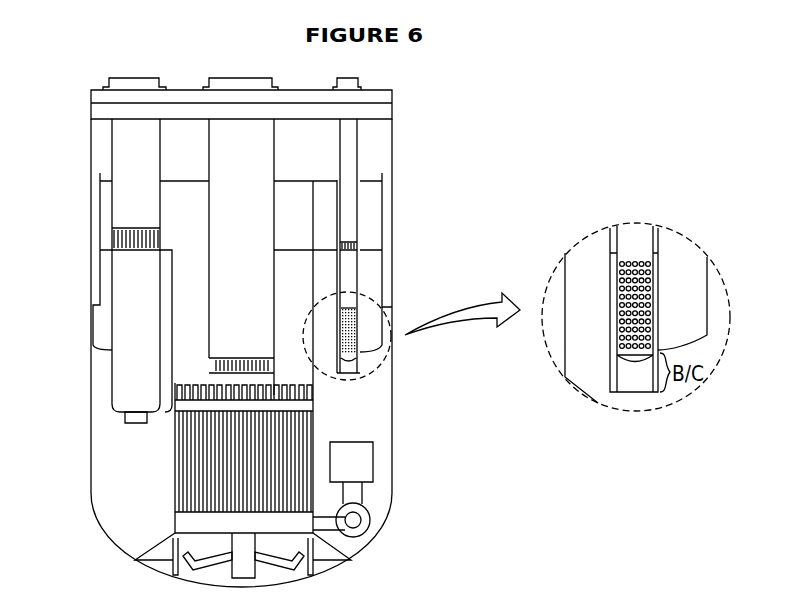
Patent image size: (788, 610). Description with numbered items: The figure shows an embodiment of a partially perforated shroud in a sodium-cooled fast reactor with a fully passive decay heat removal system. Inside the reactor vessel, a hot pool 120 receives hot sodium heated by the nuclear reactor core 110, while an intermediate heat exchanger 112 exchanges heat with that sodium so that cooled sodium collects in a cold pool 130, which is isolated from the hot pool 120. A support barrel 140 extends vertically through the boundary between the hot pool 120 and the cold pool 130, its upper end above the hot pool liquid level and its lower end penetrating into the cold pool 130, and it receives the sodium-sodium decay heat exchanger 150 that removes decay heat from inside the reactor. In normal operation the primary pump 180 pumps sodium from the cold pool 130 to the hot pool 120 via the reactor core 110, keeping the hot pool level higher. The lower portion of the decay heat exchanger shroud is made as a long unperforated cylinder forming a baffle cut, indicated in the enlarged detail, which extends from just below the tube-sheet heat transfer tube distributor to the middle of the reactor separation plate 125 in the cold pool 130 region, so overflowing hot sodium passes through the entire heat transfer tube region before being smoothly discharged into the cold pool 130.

The nuclear reactor core 110 is at (188, 447).
The intermediate heat exchanger 112 is at (118, 148).
The hot pool 120 is at (323, 197).
The reactor separation plate 125 is at (318, 410).
The cold pool 130 is at (383, 423).
The support barrel 140 is at (357, 240).
The sodium-sodium decay heat exchanger 150 is at (352, 137).
The primary pump 180 is at (365, 458).